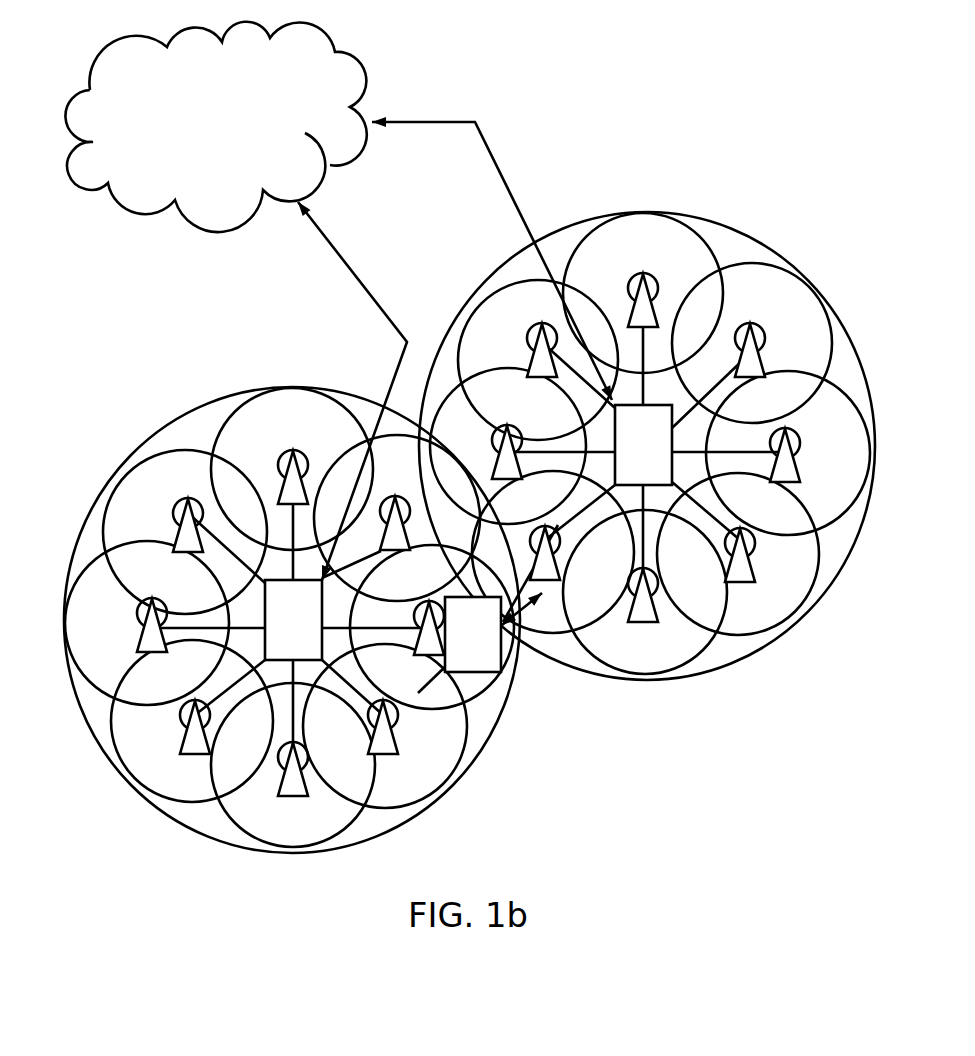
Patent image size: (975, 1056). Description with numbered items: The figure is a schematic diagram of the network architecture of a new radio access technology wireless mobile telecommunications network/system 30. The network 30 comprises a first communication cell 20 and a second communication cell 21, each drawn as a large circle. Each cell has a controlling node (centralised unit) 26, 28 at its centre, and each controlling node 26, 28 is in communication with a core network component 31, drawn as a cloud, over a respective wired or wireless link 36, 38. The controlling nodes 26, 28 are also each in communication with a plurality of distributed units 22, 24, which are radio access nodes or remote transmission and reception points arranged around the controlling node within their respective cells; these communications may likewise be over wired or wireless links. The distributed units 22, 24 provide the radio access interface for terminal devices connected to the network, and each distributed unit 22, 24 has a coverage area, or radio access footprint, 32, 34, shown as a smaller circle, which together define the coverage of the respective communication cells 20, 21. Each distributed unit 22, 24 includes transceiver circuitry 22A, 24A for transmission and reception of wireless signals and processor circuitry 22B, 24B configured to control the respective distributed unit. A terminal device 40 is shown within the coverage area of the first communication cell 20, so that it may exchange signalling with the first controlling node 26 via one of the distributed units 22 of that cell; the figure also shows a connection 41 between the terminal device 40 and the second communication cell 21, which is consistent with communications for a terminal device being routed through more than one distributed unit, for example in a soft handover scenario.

The first communication cell 20 is at (200, 403).
The second communication cell 21 is at (650, 212).
The distributed units 22 is at (291, 662).
The transceiver circuitry 22A is at (395, 725).
The processor circuitry 22B is at (398, 750).
The distributed units 24 is at (705, 476).
The transceiver circuitry 24A is at (752, 547).
The processor circuitry 24B is at (757, 570).
The controlling node 26 is at (311, 636).
The controlling node 28 is at (661, 462).
The new RAT wireless mobile telecommunications network/system 30 is at (642, 90).
The core network component 31 is at (236, 131).
The coverage area 32 is at (87, 557).
The coverage area 34 is at (752, 267).
The link 36 is at (350, 263).
The link 38 is at (435, 120).
The terminal device 40 is at (470, 678).
The link between gateway and second network 41 is at (543, 600).